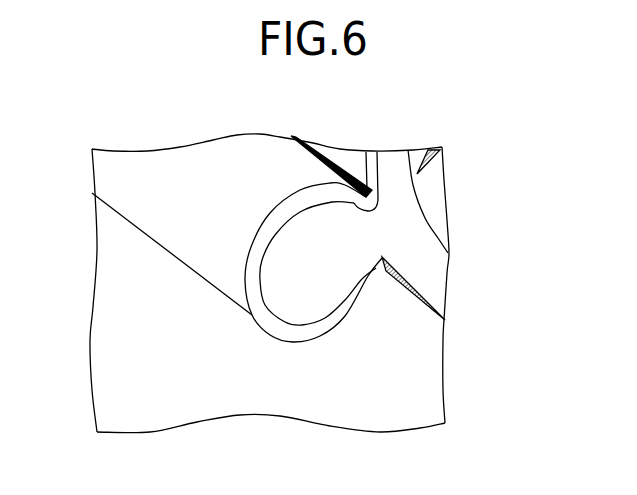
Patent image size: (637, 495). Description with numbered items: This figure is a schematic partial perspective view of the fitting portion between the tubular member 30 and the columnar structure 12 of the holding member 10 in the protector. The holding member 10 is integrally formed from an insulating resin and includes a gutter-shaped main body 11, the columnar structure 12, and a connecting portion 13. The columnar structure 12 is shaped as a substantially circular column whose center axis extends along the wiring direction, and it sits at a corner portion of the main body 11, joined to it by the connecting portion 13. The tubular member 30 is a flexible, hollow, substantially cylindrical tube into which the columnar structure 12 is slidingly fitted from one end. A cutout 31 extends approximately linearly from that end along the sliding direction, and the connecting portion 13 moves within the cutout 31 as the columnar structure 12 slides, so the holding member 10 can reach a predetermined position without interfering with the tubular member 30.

The holding member 10 is at (416, 128).
The main body 11 is at (422, 168).
The columnar structure 12 is at (318, 306).
The connecting portion 13 is at (388, 256).
The tubular member 30 is at (172, 178).
The cutout 31 is at (373, 151).